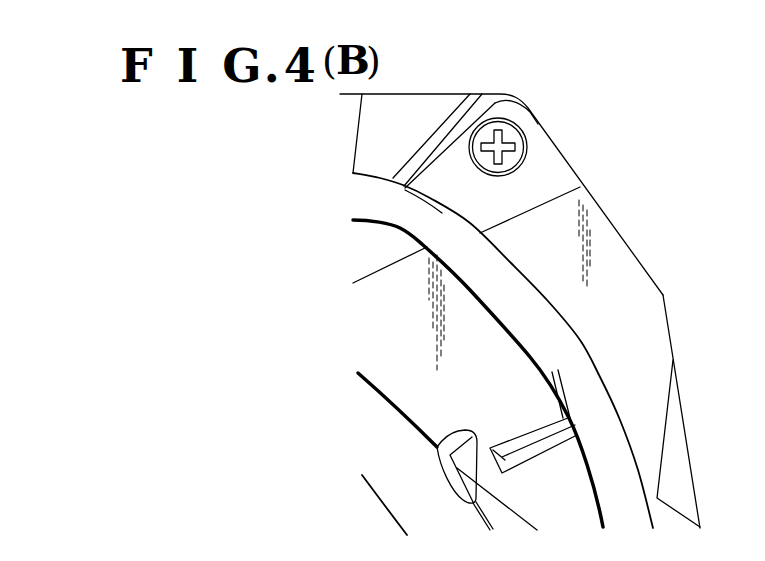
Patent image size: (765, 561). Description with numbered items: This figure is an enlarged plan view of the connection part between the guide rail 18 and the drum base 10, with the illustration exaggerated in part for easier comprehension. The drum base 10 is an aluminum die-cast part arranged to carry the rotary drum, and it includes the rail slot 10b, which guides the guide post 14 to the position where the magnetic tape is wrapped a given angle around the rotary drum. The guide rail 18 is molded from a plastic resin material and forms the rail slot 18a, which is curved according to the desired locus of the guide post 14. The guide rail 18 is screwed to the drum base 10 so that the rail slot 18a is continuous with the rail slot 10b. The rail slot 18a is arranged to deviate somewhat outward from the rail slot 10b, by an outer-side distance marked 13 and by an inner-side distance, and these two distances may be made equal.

The drum base 10 is at (415, 110).
The rail slot 10b is at (367, 200).
The thin layer 13 is at (460, 175).
The guide post 14 is at (533, 397).
The guide rail 18 is at (608, 245).
The rail slot 18a is at (625, 478).